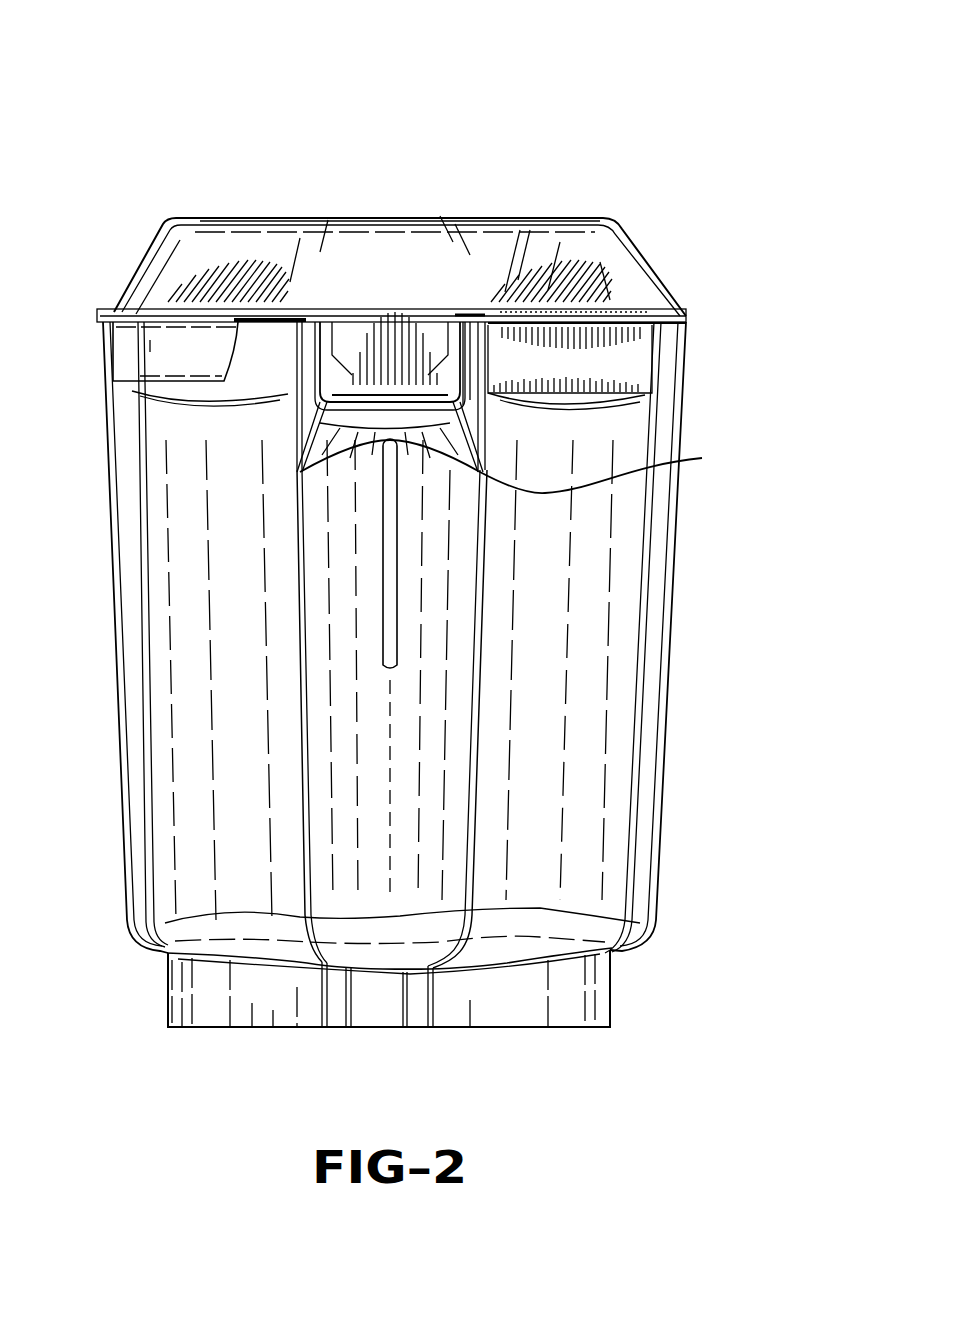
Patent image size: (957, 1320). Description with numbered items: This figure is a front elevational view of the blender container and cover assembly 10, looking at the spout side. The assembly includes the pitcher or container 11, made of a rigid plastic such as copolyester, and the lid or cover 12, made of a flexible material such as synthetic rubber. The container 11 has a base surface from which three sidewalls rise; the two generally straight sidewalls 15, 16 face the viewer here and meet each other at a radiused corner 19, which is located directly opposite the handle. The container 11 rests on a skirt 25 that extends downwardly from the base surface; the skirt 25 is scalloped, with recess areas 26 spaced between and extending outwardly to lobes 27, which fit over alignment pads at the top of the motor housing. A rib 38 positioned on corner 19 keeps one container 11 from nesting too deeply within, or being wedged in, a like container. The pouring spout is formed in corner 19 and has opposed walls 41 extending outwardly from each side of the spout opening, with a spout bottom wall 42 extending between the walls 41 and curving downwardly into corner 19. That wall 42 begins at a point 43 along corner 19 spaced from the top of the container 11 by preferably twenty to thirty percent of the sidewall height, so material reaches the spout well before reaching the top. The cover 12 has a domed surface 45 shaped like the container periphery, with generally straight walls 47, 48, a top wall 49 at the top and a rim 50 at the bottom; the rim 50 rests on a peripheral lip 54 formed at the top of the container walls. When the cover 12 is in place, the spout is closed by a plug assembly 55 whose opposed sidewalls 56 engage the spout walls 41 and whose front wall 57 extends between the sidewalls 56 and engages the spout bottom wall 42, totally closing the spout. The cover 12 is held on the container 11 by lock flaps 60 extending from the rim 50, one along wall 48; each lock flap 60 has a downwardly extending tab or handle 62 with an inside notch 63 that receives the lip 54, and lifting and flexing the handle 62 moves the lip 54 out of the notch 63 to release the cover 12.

The blender container and cover assembly 10 is at (78, 96).
The container 11 is at (665, 593).
The cover 12 is at (490, 212).
The sidewall 15 is at (548, 655).
The sidewall 16 is at (218, 685).
The radiused corner 19 is at (420, 745).
The skirt 25 is at (278, 1026).
The recess areas 26 is at (207, 1003).
The lobes 27 is at (393, 997).
The rib 38 is at (385, 548).
The opposed walls 41 is at (328, 355).
The spout bottom wall 42 is at (380, 407).
The point 43 is at (300, 472).
The domed surface 45 is at (586, 250).
The generally straight wall 47 is at (500, 265).
The generally straight wall 48 is at (197, 266).
The top wall 49 is at (323, 216).
The rim 50 is at (680, 310).
The peripheral lip 54 is at (252, 318).
The plug assembly 55 is at (399, 384).
The sidewalls 56 is at (324, 360).
The front wall 57 is at (383, 337).
The lock flaps 60 is at (106, 351).
The handle 62 is at (163, 358).
The notch 63 is at (238, 312).